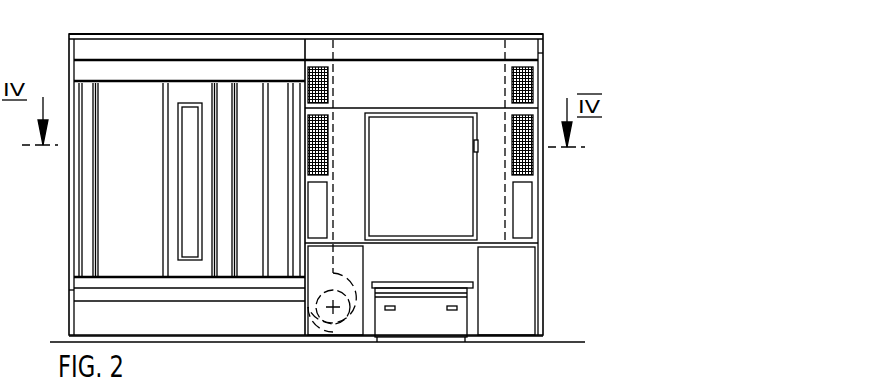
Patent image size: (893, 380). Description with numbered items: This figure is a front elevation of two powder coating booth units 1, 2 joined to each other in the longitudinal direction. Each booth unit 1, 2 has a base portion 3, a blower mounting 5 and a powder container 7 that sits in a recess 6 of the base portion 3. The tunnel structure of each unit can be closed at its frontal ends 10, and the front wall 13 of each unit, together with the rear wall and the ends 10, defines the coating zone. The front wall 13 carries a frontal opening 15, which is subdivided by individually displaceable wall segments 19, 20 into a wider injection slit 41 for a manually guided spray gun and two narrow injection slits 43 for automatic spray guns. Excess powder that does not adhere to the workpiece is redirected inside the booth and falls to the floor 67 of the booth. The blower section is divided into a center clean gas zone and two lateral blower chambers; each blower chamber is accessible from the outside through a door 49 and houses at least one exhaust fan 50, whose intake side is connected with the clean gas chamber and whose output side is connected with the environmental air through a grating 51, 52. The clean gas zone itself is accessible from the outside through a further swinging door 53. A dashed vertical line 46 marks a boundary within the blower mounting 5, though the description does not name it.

The booth unit 1 is at (164, 31).
The booth unit 2 is at (369, 32).
The base portion 3 is at (224, 334).
The blower mounting 5 is at (434, 84).
The recess 6 is at (368, 343).
The powder container 7 is at (425, 331).
The frontal end 10 is at (544, 86).
The front wall 13 is at (296, 266).
The frontal opening 15 is at (94, 157).
The wall segment 19 is at (199, 193).
The wall segment 20 is at (259, 193).
The injection slit 41 is at (134, 236).
The injection slit 43 is at (278, 165).
The section line 46 is at (334, 88).
The door 49 is at (533, 228).
The exhaust fan 50 is at (323, 338).
The grating 51 is at (329, 141).
The grating 52 is at (330, 72).
The swinging door 53 is at (421, 176).
The floor 67 is at (115, 277).